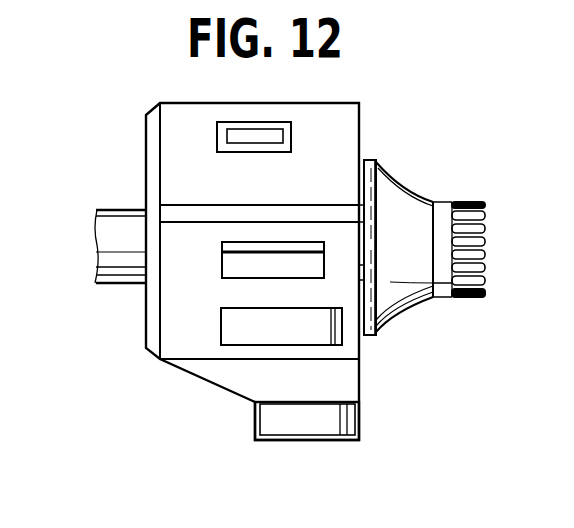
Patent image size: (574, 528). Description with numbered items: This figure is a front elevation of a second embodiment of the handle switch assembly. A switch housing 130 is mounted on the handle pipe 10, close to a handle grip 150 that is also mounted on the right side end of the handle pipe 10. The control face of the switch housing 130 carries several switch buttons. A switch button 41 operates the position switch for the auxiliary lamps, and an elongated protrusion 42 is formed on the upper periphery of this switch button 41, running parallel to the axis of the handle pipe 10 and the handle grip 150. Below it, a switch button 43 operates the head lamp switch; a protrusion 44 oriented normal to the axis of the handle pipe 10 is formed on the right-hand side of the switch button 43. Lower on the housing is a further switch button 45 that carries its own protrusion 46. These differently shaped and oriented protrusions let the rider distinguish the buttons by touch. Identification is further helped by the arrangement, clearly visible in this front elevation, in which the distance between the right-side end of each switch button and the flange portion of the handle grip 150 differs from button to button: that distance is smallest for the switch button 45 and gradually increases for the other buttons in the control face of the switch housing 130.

The handle pipe 10 is at (113, 222).
The switch housing 130 is at (343, 122).
The handle grip 150 is at (393, 195).
The switch button 41 is at (233, 263).
The elongated protrusion 42 is at (228, 245).
The switch button 43 is at (280, 320).
The protrusion 44 is at (335, 332).
The switch button 45 is at (313, 423).
The protrusion 46 is at (347, 428).